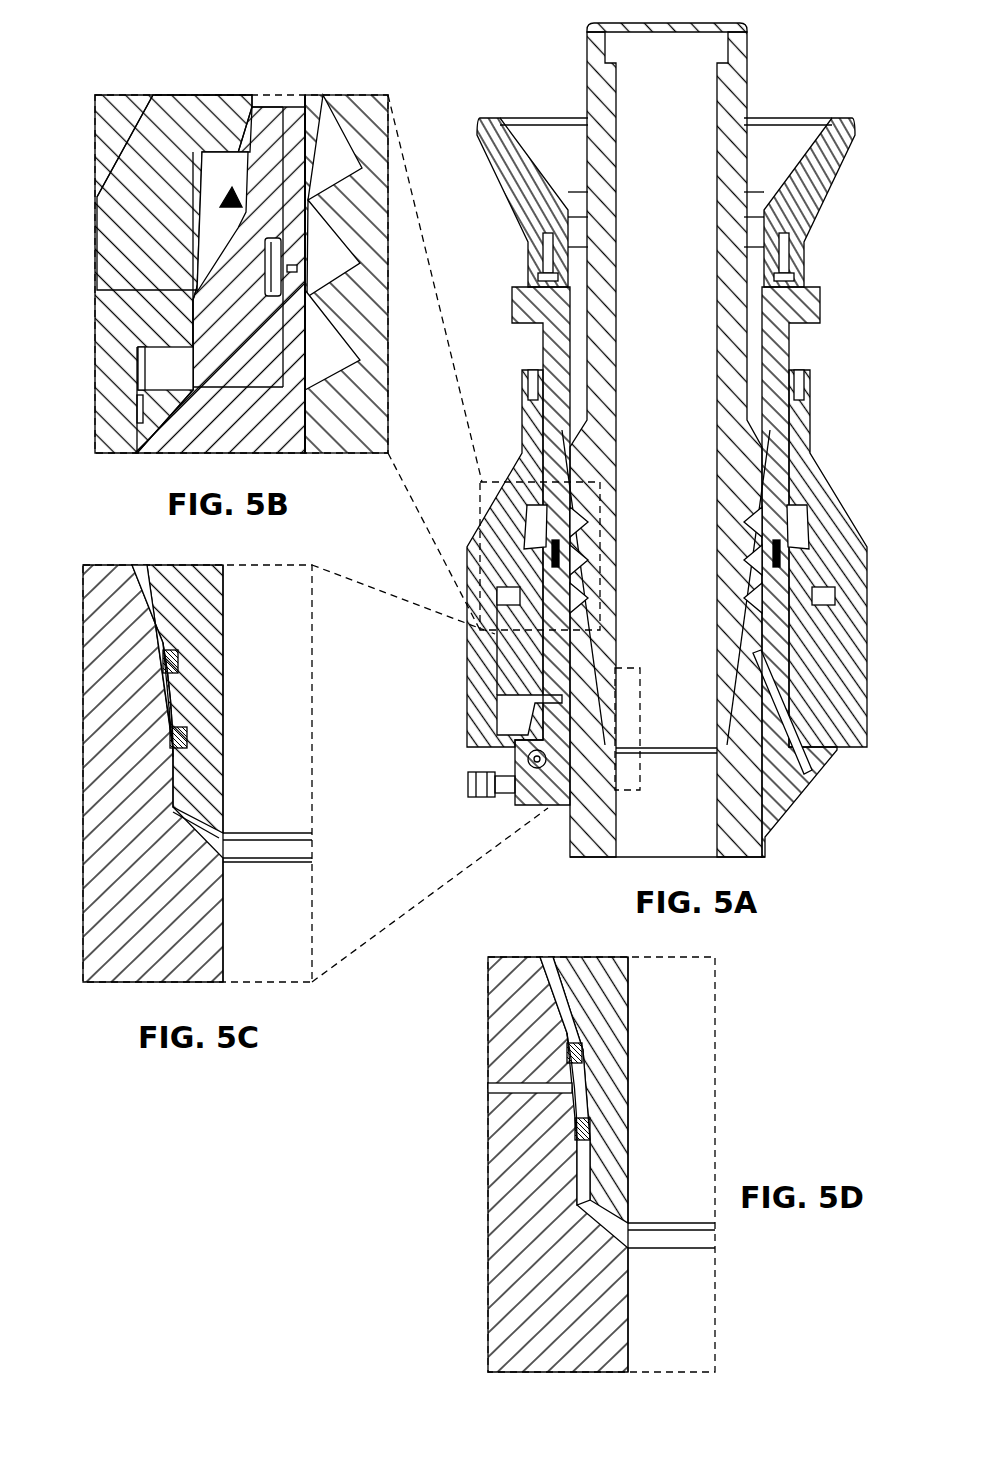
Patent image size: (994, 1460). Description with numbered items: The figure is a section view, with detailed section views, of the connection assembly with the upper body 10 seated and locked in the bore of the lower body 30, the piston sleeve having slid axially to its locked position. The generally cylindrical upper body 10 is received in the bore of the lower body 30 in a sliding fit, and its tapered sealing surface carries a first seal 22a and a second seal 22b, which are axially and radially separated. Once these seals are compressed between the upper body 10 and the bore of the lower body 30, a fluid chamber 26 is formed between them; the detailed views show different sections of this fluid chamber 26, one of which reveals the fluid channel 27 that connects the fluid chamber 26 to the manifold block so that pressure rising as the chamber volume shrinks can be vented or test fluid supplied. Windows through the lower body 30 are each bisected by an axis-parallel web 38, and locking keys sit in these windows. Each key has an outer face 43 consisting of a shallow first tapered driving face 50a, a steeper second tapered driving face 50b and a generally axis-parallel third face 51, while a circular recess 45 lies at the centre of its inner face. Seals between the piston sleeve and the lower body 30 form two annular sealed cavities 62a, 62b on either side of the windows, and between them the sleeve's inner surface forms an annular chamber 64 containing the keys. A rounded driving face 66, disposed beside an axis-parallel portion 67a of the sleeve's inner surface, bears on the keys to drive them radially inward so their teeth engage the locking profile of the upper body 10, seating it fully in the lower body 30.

In FIG. 5A, the upper body 10 is at (748, 58).
In FIG. 5D, the upper body 10 is at (603, 1005).
In FIG. 5C, the first seal 22a is at (177, 737).
In FIG. 5D, the first seal 22a is at (577, 1128).
In FIG. 5C, the second seal 22b is at (168, 660).
In FIG. 5D, the second seal 22b is at (570, 1053).
In FIG. 5C, the fluid chamber 26 is at (165, 700).
In FIG. 5D, the fluid chamber 26 is at (565, 1102).
In FIG. 5D, the fluid channel 27 is at (488, 1087).
In FIG. 5A, the lower body 30 is at (823, 752).
In FIG. 5D, the lower body 30 is at (527, 1253).
In FIG. 5B, the web 38 is at (293, 125).
In FIG. 5B, the outer face 43 is at (230, 197).
In FIG. 5B, the circular recess 45 is at (192, 357).
In FIG. 5B, the first tapered driving face 50a is at (183, 110).
In FIG. 5B, the second tapered driving face 50b is at (240, 240).
In FIG. 5B, the third face 51 is at (268, 295).
In FIG. 5A, the first sealed cavity 62a is at (797, 438).
In FIG. 5A, the second sealed cavity 62b is at (837, 640).
In FIG. 5A, the annular chamber 64 is at (798, 518).
In FIG. 5A, the driving face 66 is at (812, 578).
In FIG. 5A, the axis-parallel portion 67a is at (812, 528).